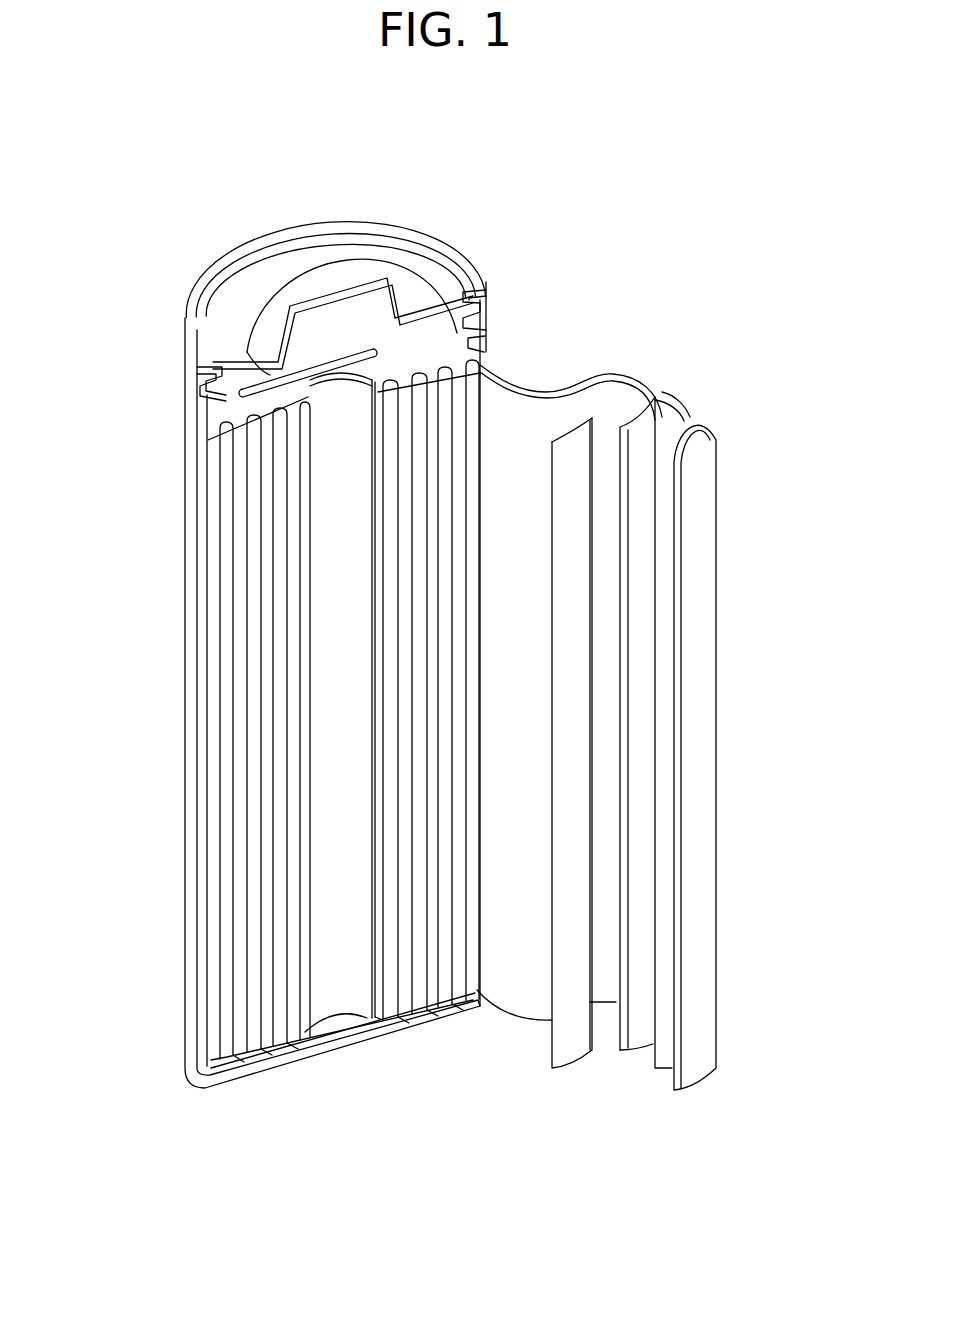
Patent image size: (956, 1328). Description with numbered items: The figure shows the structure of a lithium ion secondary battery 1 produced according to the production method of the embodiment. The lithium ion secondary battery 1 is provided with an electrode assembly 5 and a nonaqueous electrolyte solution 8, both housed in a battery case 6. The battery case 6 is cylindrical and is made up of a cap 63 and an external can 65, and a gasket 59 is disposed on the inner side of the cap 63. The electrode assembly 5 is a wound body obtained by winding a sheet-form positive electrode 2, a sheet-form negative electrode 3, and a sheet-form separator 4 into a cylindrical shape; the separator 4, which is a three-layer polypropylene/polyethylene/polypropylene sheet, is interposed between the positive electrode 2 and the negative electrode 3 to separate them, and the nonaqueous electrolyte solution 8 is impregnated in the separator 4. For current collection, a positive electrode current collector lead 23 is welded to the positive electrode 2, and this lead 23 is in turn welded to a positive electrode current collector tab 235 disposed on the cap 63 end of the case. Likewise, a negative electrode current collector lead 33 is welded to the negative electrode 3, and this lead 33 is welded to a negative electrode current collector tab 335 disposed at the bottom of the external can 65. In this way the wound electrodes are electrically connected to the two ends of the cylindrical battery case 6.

The lithium ion secondary battery 1 is at (625, 190).
The positive electrode 2 is at (643, 730).
The negative electrode 3 is at (697, 843).
The separator 4 is at (663, 620).
The electrode assembly 5 is at (772, 595).
The battery case 6 is at (90, 352).
The nonaqueous electrolyte solution 8 is at (252, 1055).
The positive electrode current collector lead 23 is at (420, 372).
The negative electrode current collector lead 33 is at (427, 1017).
The gasket 59 is at (487, 312).
The cap 63 is at (220, 326).
The external can 65 is at (193, 563).
The positive electrode current collector tab 235 is at (381, 352).
The negative electrode current collector tab 335 is at (338, 1035).